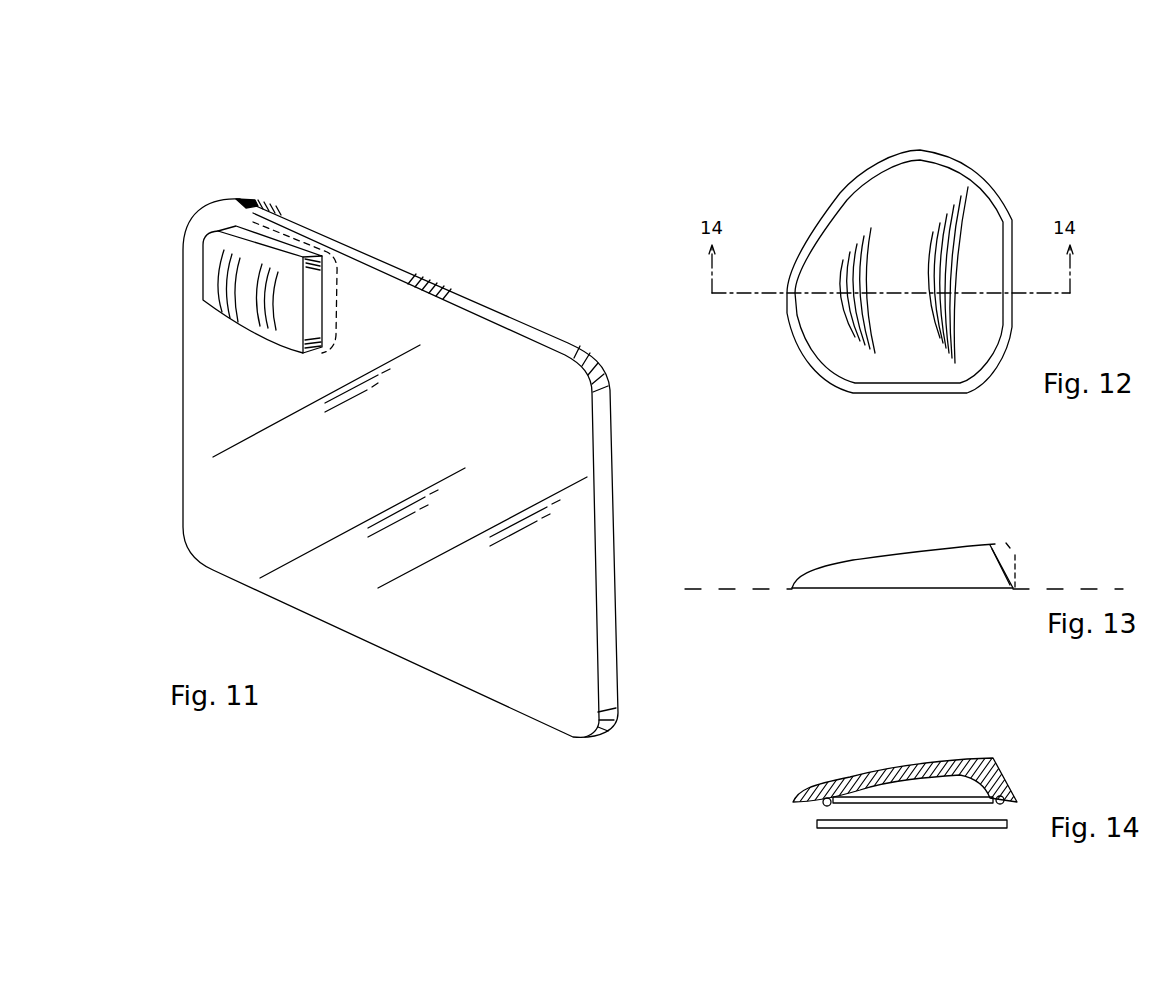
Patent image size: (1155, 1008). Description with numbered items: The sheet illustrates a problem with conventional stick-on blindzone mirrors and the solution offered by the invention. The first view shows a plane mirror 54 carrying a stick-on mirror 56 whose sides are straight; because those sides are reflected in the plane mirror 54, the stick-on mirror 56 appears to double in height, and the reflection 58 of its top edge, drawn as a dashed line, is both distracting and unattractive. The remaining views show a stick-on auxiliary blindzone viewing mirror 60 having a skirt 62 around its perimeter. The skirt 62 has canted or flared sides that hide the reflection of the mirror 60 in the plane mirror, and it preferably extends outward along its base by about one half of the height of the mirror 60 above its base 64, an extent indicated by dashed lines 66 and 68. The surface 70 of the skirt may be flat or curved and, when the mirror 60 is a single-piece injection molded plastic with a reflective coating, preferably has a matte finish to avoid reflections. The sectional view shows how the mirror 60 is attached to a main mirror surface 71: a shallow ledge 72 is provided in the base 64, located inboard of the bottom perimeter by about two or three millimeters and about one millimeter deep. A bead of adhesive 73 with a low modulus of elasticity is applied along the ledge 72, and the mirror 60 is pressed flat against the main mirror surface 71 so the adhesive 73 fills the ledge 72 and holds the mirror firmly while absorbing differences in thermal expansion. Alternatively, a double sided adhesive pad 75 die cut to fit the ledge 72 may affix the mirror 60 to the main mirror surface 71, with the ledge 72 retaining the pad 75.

In FIG. 11, the plane mirror 54 is at (455, 305).
In FIG. 11, the stick-on mirror 56 is at (248, 252).
In FIG. 11, the reflection 58 is at (340, 273).
In FIG. 12, the stick-on auxiliary blindzone viewing mirror 60 is at (812, 142).
In FIG. 13, the stick-on auxiliary blindzone viewing mirror 60 is at (882, 565).
In FIG. 14, the stick-on auxiliary blindzone viewing mirror 60 is at (927, 760).
In FIG. 12, the skirt 62 is at (983, 173).
In FIG. 13, the base 64 is at (895, 592).
In FIG. 13, the dashed line 66 is at (1015, 563).
In FIG. 13, the dashed line 68 is at (1008, 545).
In FIG. 13, the surface 70 is at (998, 557).
In FIG. 13, the main mirror surface 71 is at (733, 592).
In FIG. 14, the ledge 72 is at (963, 803).
In FIG. 14, the adhesive 73 is at (1010, 800).
In FIG. 14, the double sided adhesive pad 75 is at (845, 828).